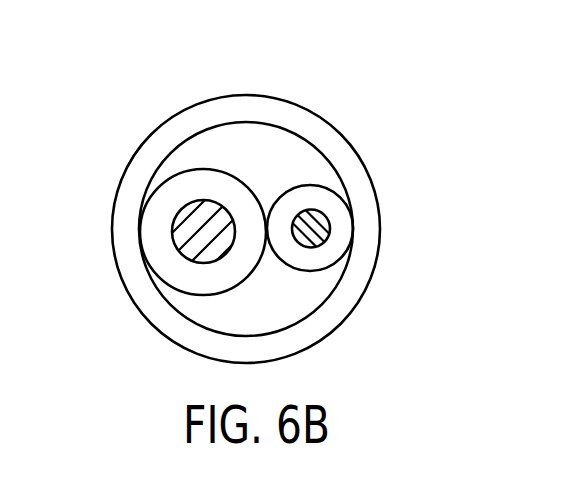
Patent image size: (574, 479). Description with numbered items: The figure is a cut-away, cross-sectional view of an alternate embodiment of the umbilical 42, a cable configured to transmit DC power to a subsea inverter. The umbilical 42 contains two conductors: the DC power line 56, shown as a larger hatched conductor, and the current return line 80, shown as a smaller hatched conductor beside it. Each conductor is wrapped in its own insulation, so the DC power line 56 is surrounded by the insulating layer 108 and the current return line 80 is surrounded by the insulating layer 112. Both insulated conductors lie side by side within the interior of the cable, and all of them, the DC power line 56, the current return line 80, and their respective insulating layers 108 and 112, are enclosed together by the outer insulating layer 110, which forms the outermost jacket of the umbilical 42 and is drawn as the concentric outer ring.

The umbilical 42 is at (357, 114).
The DC power line 56 is at (172, 232).
The current return line 80 is at (302, 210).
The insulating layer 108 is at (222, 277).
The outer insulating layer 110 is at (368, 215).
The insulating layer 112 is at (330, 248).